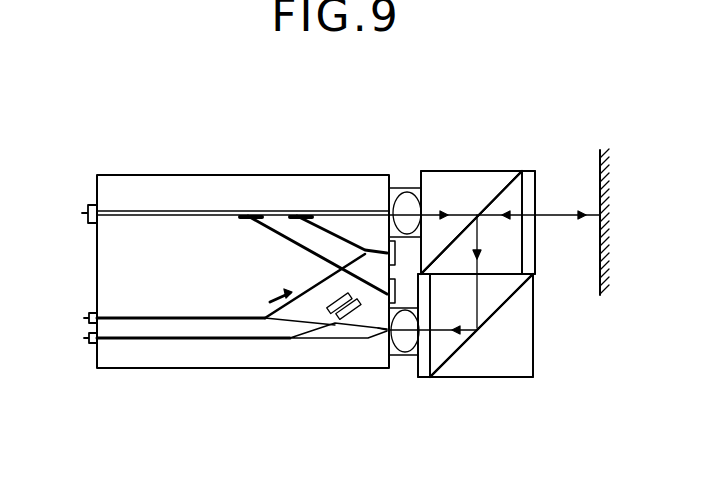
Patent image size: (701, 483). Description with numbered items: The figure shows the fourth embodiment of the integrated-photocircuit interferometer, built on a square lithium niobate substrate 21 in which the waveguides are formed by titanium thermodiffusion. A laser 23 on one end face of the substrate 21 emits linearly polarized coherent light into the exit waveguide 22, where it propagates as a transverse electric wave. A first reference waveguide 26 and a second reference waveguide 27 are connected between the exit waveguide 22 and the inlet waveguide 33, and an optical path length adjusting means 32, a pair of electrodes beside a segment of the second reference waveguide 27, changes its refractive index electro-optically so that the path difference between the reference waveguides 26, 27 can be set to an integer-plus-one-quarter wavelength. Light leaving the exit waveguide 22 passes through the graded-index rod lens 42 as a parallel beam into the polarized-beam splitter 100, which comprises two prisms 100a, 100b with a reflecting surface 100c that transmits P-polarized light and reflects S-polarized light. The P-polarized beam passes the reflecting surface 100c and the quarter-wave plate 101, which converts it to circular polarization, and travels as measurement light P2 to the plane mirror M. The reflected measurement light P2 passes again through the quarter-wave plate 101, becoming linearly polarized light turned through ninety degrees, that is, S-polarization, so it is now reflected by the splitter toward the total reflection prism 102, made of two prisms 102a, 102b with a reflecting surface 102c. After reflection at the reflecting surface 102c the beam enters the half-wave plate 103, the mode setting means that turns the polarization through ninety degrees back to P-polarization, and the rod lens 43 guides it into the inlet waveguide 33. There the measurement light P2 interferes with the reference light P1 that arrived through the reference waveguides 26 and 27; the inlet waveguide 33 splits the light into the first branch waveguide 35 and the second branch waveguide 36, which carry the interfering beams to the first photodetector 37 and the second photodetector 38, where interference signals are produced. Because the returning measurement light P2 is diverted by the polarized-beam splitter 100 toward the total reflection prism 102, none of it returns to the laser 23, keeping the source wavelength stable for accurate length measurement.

The substrate 21 is at (180, 186).
The exit waveguide 22 is at (157, 217).
The laser 23 is at (88, 218).
The first reference waveguide 26 is at (330, 222).
The second reference waveguide 27 is at (282, 236).
The optical path length adjusting means 32 is at (335, 292).
The inlet waveguide 33 is at (378, 338).
The first branch waveguide 35 is at (175, 318).
The second branch waveguide 36 is at (180, 341).
The first photodetector 37 is at (89, 317).
The second photodetector 38 is at (89, 339).
The rod lens 42 is at (397, 192).
The rod lens 43 is at (397, 356).
The polarized-beam splitter 100 is at (470, 171).
The prism 100a is at (475, 178).
The prism 100b is at (510, 200).
The reflecting surface 100c is at (454, 204).
The quarter-wave plate 101 is at (531, 188).
The total reflection prism 102 is at (511, 375).
The prism 102a is at (450, 342).
The prism 102b is at (515, 352).
The reflecting surface 102c is at (503, 307).
The half-wave plate 103 is at (425, 379).
The plane mirror M is at (600, 150).
The reference light P1 is at (268, 378).
The measurement light P2 is at (582, 219).